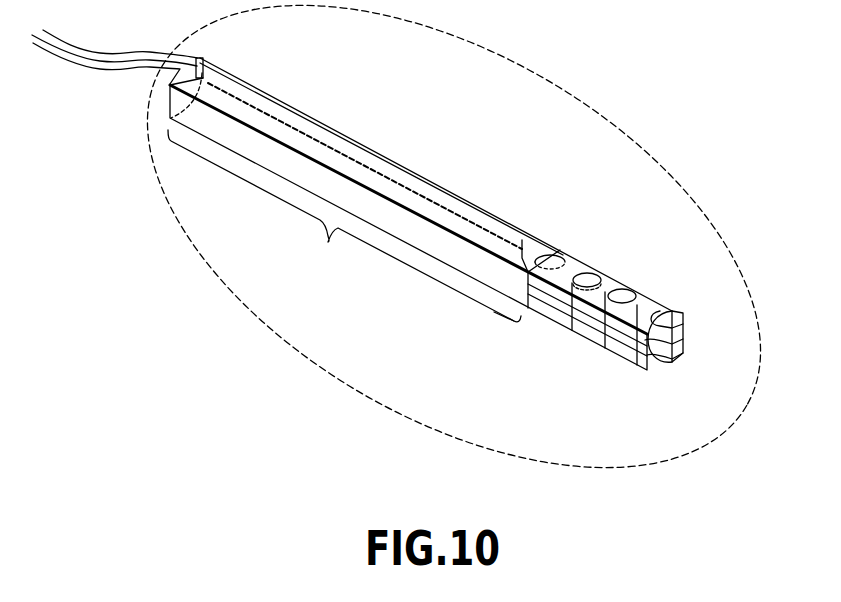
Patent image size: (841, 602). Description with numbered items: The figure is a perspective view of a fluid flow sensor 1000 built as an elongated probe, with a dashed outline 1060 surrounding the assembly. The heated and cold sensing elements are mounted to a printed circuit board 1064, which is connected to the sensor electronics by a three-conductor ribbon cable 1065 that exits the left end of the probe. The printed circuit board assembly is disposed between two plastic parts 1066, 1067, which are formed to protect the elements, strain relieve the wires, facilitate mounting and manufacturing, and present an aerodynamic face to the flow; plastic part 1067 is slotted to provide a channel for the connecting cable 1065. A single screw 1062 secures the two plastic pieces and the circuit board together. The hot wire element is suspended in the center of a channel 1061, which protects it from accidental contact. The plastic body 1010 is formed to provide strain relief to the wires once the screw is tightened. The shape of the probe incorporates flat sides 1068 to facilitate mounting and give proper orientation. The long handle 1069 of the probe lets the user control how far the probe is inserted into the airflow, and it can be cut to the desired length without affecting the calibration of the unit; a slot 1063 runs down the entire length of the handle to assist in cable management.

The fluid flow sensor 1000 is at (352, 470).
The plastic body 1010 is at (410, 168).
The enlarged region boundary 1060 is at (603, 468).
The channel 1061 is at (623, 297).
The screw 1062 is at (590, 280).
The slot 1063 is at (217, 82).
The printed circuit board 1064 is at (683, 328).
The ribbon cable 1065 is at (82, 67).
The plastic part 1066 is at (572, 252).
The plastic part 1067 is at (494, 312).
The flat sides 1068 is at (170, 100).
The handle 1069 is at (344, 226).